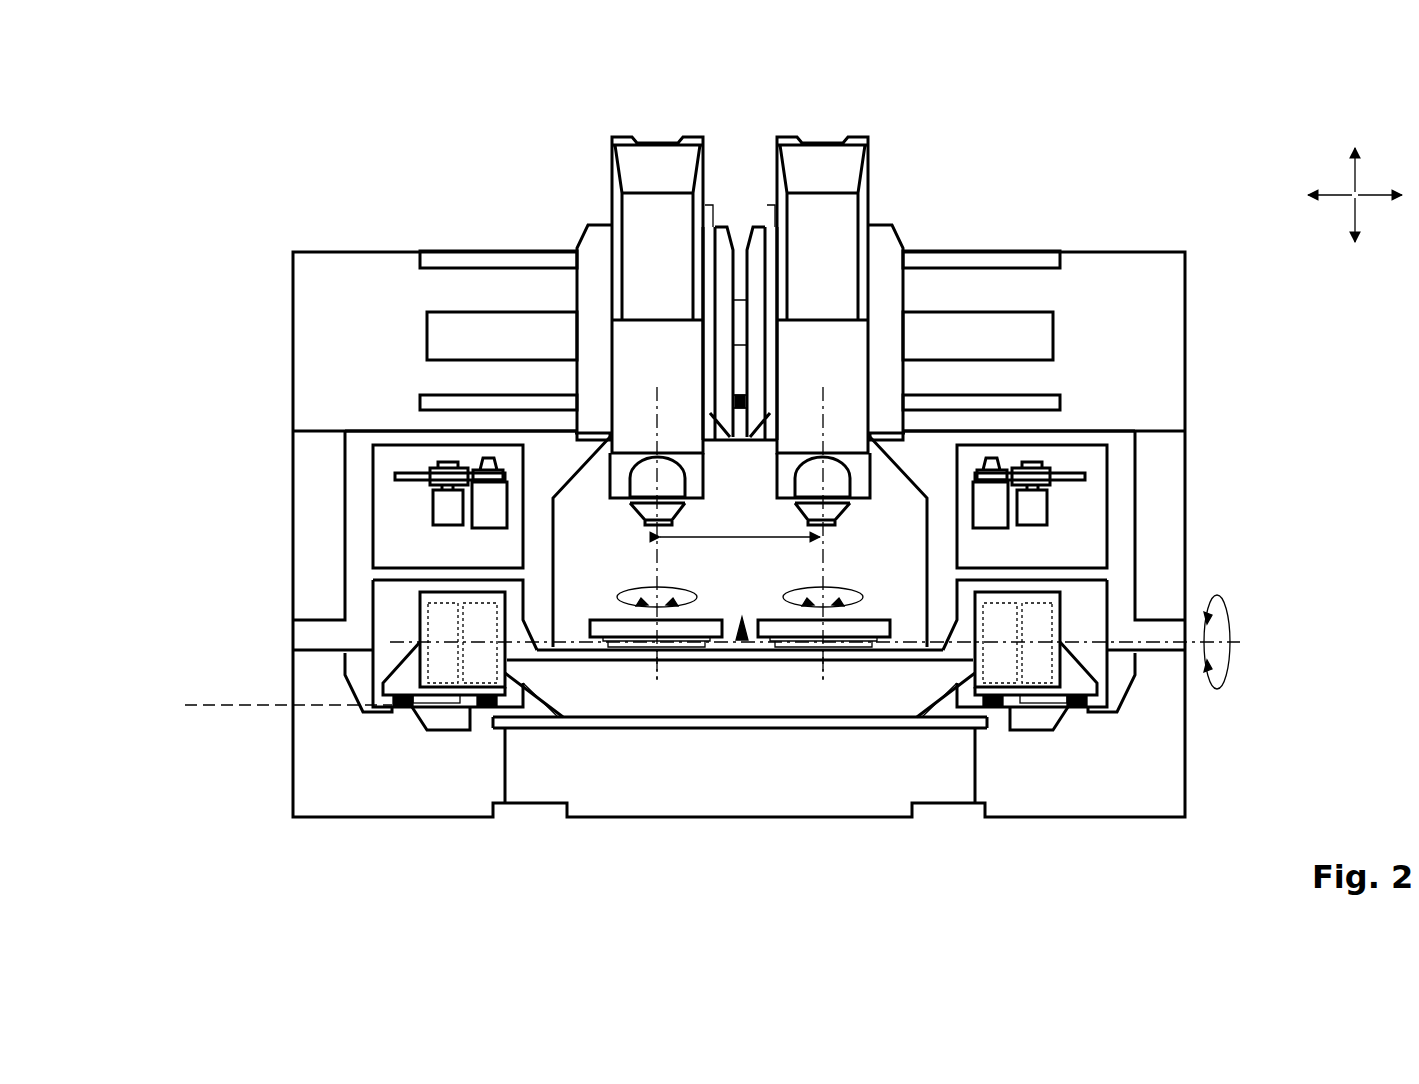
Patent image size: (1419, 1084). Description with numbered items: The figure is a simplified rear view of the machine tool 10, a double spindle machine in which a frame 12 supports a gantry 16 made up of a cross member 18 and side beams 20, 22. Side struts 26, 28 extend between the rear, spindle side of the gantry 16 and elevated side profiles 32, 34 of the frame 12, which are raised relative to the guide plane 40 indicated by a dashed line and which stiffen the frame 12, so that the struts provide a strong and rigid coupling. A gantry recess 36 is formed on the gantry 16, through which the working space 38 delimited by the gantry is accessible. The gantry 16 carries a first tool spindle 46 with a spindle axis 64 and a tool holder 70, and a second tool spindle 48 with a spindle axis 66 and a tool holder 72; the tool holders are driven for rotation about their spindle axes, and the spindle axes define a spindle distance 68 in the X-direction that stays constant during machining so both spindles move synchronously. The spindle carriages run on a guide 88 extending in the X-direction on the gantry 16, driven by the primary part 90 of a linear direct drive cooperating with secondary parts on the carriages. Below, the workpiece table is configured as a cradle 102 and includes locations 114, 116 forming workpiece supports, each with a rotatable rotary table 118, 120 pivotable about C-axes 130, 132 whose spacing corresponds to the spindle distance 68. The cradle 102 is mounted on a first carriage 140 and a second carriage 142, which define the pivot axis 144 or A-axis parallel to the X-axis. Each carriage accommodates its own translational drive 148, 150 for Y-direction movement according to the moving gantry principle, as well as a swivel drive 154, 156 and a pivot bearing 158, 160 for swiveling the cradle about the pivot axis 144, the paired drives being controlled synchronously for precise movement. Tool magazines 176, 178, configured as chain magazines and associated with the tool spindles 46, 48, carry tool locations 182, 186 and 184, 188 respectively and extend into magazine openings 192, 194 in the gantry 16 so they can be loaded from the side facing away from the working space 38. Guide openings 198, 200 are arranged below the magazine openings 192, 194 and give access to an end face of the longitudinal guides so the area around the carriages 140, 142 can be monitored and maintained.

The machine tool 10 is at (222, 176).
The frame 12 is at (1140, 755).
The gantry 16 is at (1123, 303).
The cross member 18 is at (965, 287).
The side beam 20 is at (259, 494).
The side strut 26 is at (328, 470).
The side beam 22 is at (1270, 517).
The side strut 28 is at (1157, 482).
The side profile 32 is at (320, 682).
The side profile 34 is at (1170, 677).
The gantry recess 36 is at (738, 527).
The working space 38 is at (740, 622).
The guide plane 40 is at (184, 699).
The first tool spindle 46 is at (623, 353).
The second tool spindle 48 is at (853, 342).
The spindle axis 64 is at (655, 430).
The spindle axis 66 is at (826, 415).
The spindle distance 68 is at (720, 537).
The tool holder 70 is at (640, 510).
The tool holder 72 is at (840, 510).
The guide 88 is at (1003, 262).
The primary part 90 is at (1043, 338).
The cradle 102 is at (597, 702).
The location 114 is at (693, 640).
The location 116 is at (788, 640).
The rotary table 118 is at (702, 620).
The rotary table 120 is at (785, 620).
The axis 130 is at (657, 668).
The axis 132 is at (823, 665).
The first carriage 140 is at (420, 613).
The second carriage 142 is at (1062, 612).
The pivot axis 144 is at (1237, 640).
The translational drive 148 is at (445, 690).
The translational drive 150 is at (1000, 663).
The swivel drive 154 is at (481, 665).
The swivel drive 156 is at (1040, 660).
The pivot bearing 158 is at (530, 705).
The pivot bearing 160 is at (967, 658).
The tool magazine 176 is at (445, 470).
The tool magazine 178 is at (1030, 467).
The tool location 182 is at (492, 468).
The tool location 184 is at (990, 457).
The tool location 186 is at (420, 475).
The tool location 188 is at (1073, 470).
The magazine opening 192 is at (408, 523).
The magazine opening 194 is at (1083, 530).
The guide opening 198 is at (390, 653).
The guide opening 200 is at (1090, 658).